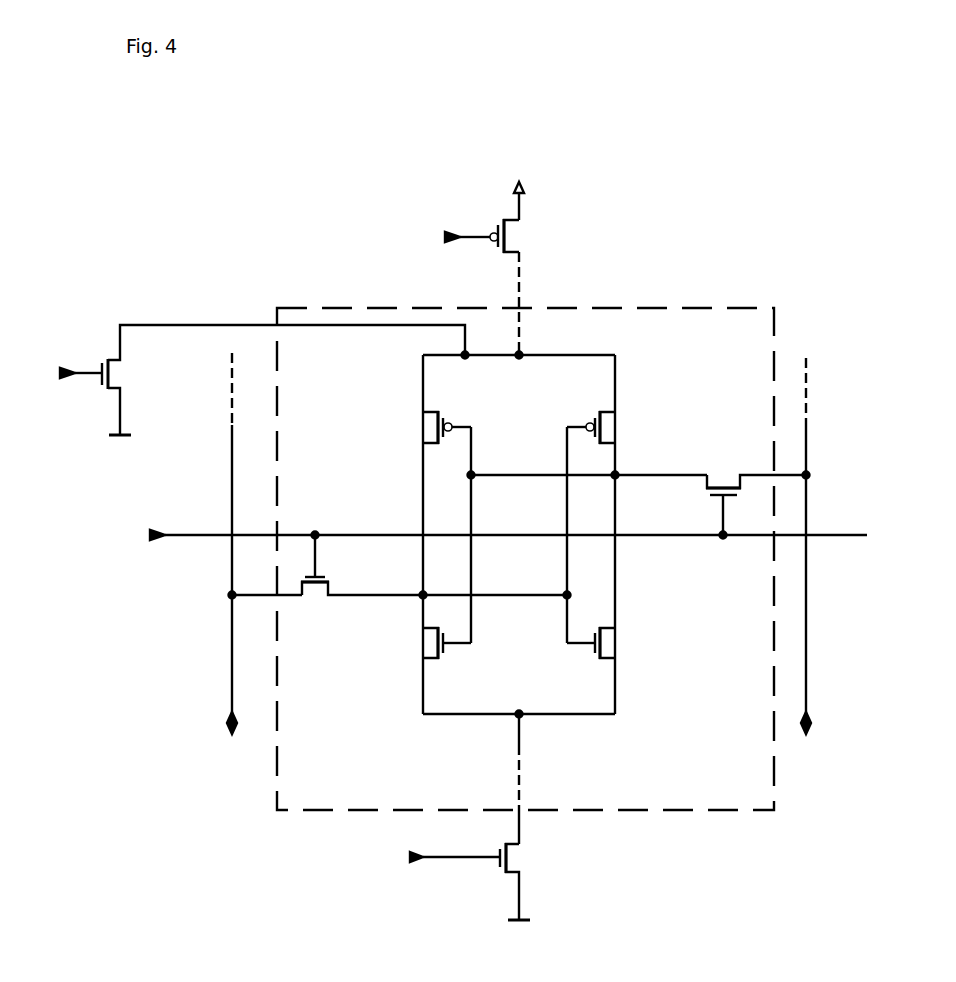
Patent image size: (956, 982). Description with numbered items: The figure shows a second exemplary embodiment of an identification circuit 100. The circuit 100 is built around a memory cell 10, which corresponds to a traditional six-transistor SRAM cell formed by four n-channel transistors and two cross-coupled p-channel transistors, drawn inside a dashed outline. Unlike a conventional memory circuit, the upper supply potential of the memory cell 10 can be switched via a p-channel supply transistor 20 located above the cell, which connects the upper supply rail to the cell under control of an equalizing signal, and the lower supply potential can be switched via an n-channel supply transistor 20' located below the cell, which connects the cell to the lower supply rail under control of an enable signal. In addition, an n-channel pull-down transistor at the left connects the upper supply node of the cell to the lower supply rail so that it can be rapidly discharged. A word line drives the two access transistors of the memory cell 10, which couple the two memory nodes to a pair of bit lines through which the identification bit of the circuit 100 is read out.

The memory cell 10 is at (722, 308).
The supply-side equalizing transistor TP-VDD 20 is at (485, 251).
The ground-side equalizing transistor TN-VSS 20' is at (471, 834).
The identification circuit 100 is at (759, 894).